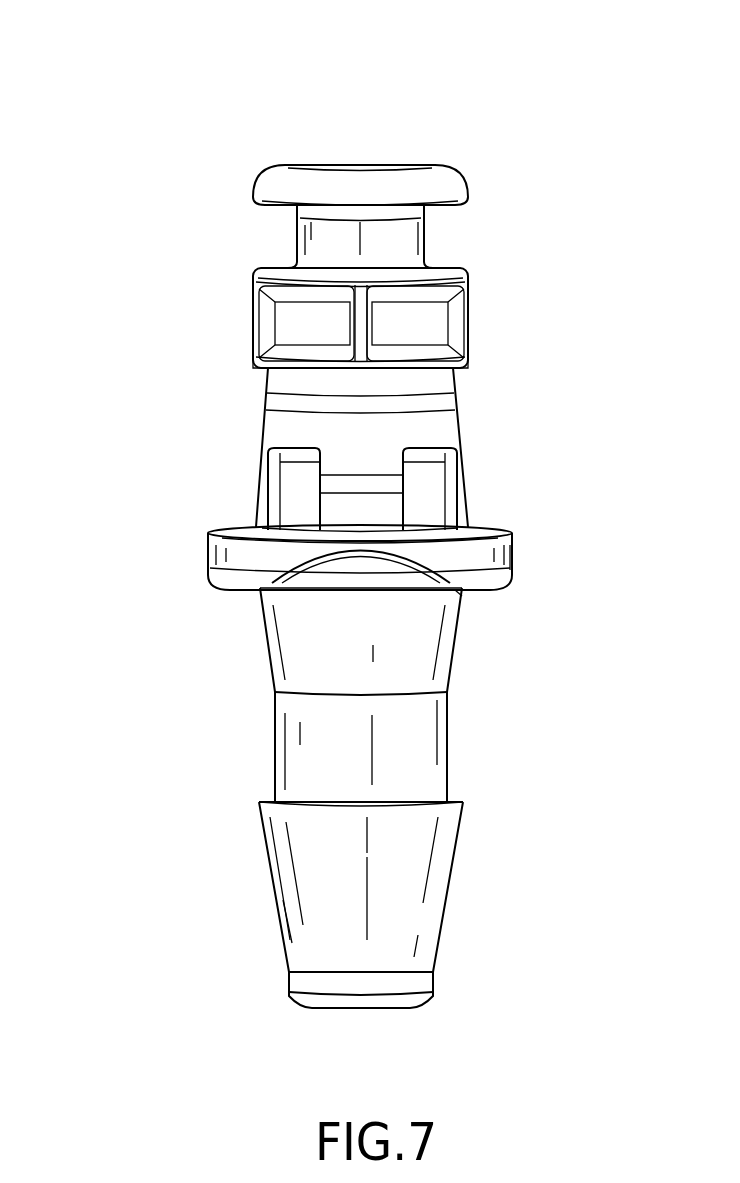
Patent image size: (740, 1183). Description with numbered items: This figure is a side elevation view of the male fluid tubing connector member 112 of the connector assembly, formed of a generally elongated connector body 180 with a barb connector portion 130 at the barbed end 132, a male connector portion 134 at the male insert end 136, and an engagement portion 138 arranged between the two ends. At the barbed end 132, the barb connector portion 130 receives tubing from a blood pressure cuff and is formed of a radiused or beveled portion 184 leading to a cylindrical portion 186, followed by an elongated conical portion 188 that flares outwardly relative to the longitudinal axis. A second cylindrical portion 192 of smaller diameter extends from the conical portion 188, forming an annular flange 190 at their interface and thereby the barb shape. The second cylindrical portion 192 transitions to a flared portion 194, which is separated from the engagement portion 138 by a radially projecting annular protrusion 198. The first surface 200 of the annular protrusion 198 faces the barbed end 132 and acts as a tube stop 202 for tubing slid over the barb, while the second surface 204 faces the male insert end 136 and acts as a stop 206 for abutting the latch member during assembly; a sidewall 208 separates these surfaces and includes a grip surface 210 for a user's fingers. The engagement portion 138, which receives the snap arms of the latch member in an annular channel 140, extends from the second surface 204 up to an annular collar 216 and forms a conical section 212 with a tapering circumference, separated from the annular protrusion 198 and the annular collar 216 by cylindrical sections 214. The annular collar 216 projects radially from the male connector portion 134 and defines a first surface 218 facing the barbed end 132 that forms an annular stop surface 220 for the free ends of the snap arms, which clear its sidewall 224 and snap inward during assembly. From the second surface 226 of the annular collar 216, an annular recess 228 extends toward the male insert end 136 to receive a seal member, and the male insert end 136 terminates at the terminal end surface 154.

The connector member 112 is at (122, 352).
The barb connector portion 130 is at (442, 893).
The barbed end 132 is at (470, 983).
The male connector portion 134 is at (207, 264).
The male insert end 136 is at (307, 80).
The engagement portion 138 is at (255, 463).
The annular channel 140 is at (215, 508).
The terminal end surface 154 is at (427, 165).
The connector body 180 is at (493, 761).
The beveled portion 184 is at (297, 1002).
The cylindrical portion 186 is at (290, 982).
The conical portion 188 is at (275, 903).
The annular flange 190 is at (268, 800).
The second cylindrical portion 192 is at (275, 735).
The flared portion 194 is at (268, 655).
The annular protrusion 198 is at (513, 540).
The first surface 200 is at (493, 587).
The tube stop 202 is at (475, 587).
The second surface 204 is at (500, 528).
The stop 206 is at (478, 525).
The sidewall 208 is at (507, 558).
The grip surface 210 is at (338, 565).
The conical section 212 is at (462, 448).
The cylindrical section 214 is at (455, 382).
The annular collar 216 is at (468, 290).
The first surface 218 is at (253, 367).
The annular stop surface 220 is at (270, 370).
The sidewall 224 is at (468, 315).
The second surface 226 is at (455, 270).
The annular recess 228 is at (427, 225).